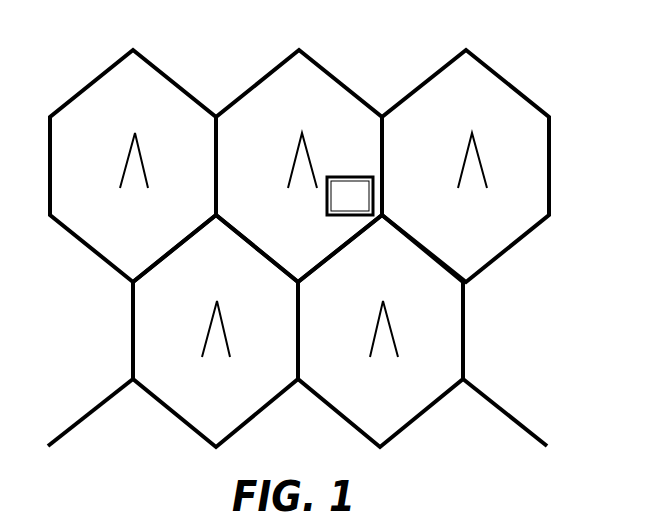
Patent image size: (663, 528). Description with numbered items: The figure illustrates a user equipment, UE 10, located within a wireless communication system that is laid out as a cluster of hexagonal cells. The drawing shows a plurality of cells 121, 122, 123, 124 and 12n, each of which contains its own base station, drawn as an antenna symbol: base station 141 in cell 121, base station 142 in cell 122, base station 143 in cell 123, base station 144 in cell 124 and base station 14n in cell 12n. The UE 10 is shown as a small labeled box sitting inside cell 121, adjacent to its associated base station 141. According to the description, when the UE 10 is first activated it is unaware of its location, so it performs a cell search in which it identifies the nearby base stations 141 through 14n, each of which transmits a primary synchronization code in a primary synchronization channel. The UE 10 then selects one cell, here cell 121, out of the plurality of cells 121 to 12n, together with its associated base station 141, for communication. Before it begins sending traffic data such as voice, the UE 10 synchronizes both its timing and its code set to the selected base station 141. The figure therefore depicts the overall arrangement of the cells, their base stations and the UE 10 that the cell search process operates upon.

The user equipment 10 is at (352, 177).
The cell 121 is at (332, 77).
The cell 122 is at (167, 77).
The cell 123 is at (131, 334).
The cell 124 is at (463, 334).
The cell 12n is at (514, 88).
The base station 141 is at (298, 158).
The base station 142 is at (142, 163).
The base station 143 is at (222, 331).
The base station 144 is at (393, 331).
The base station 14n is at (482, 163).